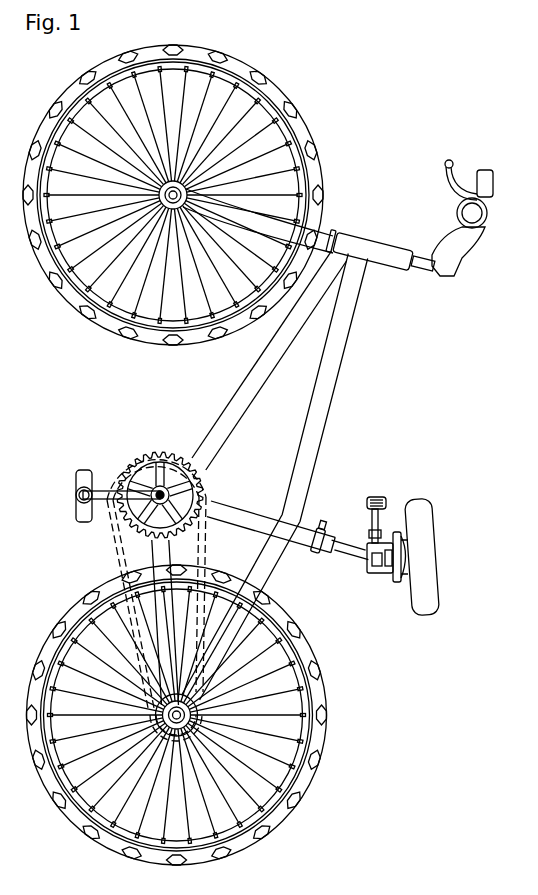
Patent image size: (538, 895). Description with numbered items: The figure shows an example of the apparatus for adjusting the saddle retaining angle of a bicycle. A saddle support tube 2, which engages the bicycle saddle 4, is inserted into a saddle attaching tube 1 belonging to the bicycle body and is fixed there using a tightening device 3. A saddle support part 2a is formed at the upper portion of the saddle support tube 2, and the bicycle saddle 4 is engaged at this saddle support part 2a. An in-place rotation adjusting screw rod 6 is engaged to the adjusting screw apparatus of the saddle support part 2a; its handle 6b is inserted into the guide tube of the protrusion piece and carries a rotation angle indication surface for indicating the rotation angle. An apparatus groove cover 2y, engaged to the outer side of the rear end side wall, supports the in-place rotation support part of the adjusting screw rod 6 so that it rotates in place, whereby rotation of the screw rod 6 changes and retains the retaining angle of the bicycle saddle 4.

The saddle attaching tube 1 is at (315, 545).
The saddle support tube 2 is at (350, 535).
The saddle support part 2a is at (396, 535).
The apparatus groove cover 2y is at (382, 575).
The tightening device 3 is at (337, 552).
The bicycle saddle 4 is at (437, 557).
The in-place rotation adjusting screw rod 6 is at (380, 511).
The handle 6b is at (379, 497).